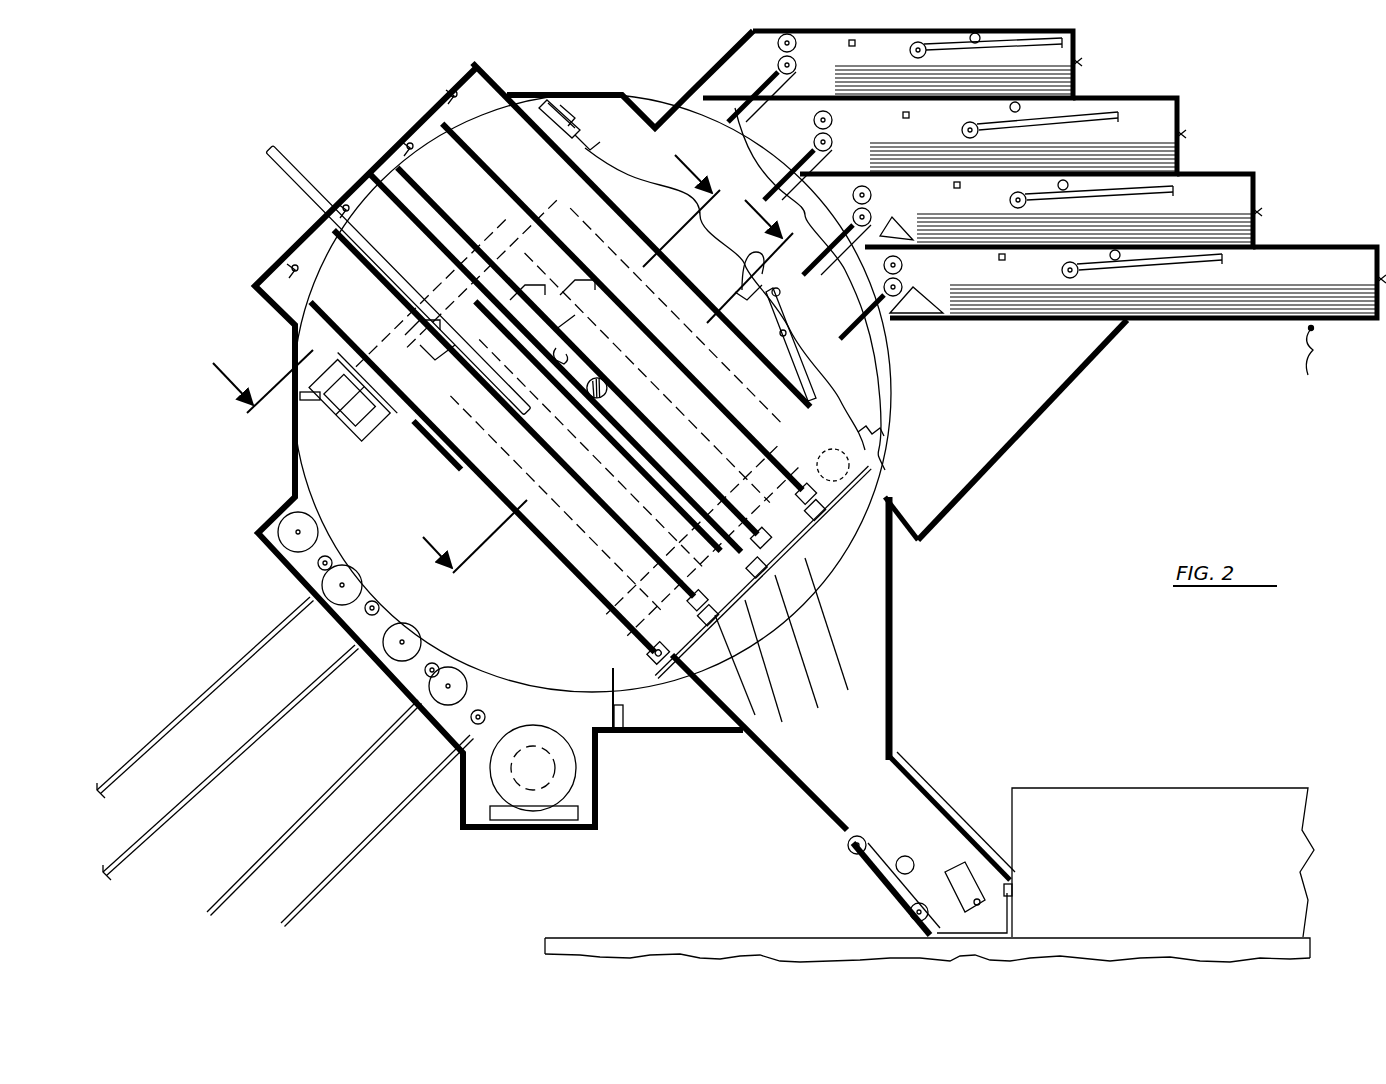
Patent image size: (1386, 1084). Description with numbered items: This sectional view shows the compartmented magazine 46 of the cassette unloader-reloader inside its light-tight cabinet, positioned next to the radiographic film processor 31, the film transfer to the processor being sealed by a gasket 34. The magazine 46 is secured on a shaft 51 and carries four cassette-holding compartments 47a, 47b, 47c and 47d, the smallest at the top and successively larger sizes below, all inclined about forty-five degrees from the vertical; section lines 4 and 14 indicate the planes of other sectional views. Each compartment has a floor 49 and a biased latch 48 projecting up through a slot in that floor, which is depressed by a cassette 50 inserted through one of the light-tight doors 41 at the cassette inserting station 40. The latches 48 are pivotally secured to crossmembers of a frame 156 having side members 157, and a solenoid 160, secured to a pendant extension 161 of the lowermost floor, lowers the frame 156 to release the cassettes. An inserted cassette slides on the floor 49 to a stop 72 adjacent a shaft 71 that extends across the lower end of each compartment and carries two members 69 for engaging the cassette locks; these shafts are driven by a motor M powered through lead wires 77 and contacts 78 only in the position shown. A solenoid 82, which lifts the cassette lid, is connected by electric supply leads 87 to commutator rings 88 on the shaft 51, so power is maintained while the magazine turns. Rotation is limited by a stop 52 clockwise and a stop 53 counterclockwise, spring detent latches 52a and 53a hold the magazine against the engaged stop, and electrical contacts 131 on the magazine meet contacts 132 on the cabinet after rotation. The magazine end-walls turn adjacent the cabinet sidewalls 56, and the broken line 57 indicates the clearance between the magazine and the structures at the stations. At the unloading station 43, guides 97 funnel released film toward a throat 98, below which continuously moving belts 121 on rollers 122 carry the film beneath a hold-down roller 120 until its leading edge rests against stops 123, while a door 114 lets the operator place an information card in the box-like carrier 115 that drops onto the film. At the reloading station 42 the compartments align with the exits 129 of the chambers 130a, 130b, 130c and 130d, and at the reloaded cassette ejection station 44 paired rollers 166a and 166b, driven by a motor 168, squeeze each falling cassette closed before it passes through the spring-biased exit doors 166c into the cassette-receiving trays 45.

The radiographic film processor 31 is at (1200, 786).
The gasket 34 is at (1012, 886).
The cassette inserting station 40 is at (470, 58).
The light-tight doors 41 is at (446, 90).
The reloading station 42 is at (1312, 378).
The unloading station 43 is at (905, 675).
The reloaded cassette ejection station 44 is at (262, 560).
The cassette-receiving trays 45 is at (282, 760).
The compartmented magazine 46 is at (887, 462).
The cassette-holding compartment 47a is at (737, 363).
The cassette-holding compartment 47b is at (694, 410).
The cassette-holding compartment 47c is at (635, 473).
The cassette-holding compartment 47d is at (589, 528).
The biased latch 48 is at (433, 347).
The compartment floor 49 is at (760, 420).
The cassette 50 is at (266, 150).
The shaft 51 is at (592, 400).
The stop 52 is at (556, 100).
The spring detent latch 52a is at (584, 140).
The stop 53 is at (652, 125).
The spring detent latch 53a is at (866, 425).
The cabinet sidewalls 56 is at (893, 342).
The broken line 57 is at (905, 400).
The lock-engaging members 69 is at (815, 510).
The shaft 71 is at (790, 545).
The stop 72 is at (800, 492).
The lead wires 77 is at (830, 318).
The contacts 78 is at (580, 120).
The solenoid 82 is at (776, 290).
The electric supply leads 87 is at (738, 285).
The commutator rings 88 is at (558, 372).
The guides 97 is at (800, 720).
The throat 98 is at (868, 808).
The door 114 is at (940, 790).
The box-like carrier 115 is at (975, 870).
The hold-down roller 120 is at (910, 858).
The continuously moving belts 121 is at (882, 900).
The rollers 122 is at (850, 845).
The stops 123 is at (1000, 925).
The chamber exits 129 is at (796, 150).
The chamber 130a is at (1090, 45).
The chamber 130b is at (1160, 141).
The chamber 130c is at (1235, 208).
The chamber 130d is at (1328, 275).
The electrical contacts 131 is at (300, 432).
The contacts 132 is at (612, 672).
The frame 156 is at (462, 482).
The side members 157 is at (456, 470).
The solenoid 160 is at (375, 440).
The pendant extension 161 is at (352, 440).
The roller 166a is at (300, 562).
The roller 166b is at (330, 600).
The spring-biased exit doors 166c is at (390, 680).
The motor 168 is at (530, 800).
The section line 4- 4 is at (462, 280).
The section line 14- 14 is at (598, 386).